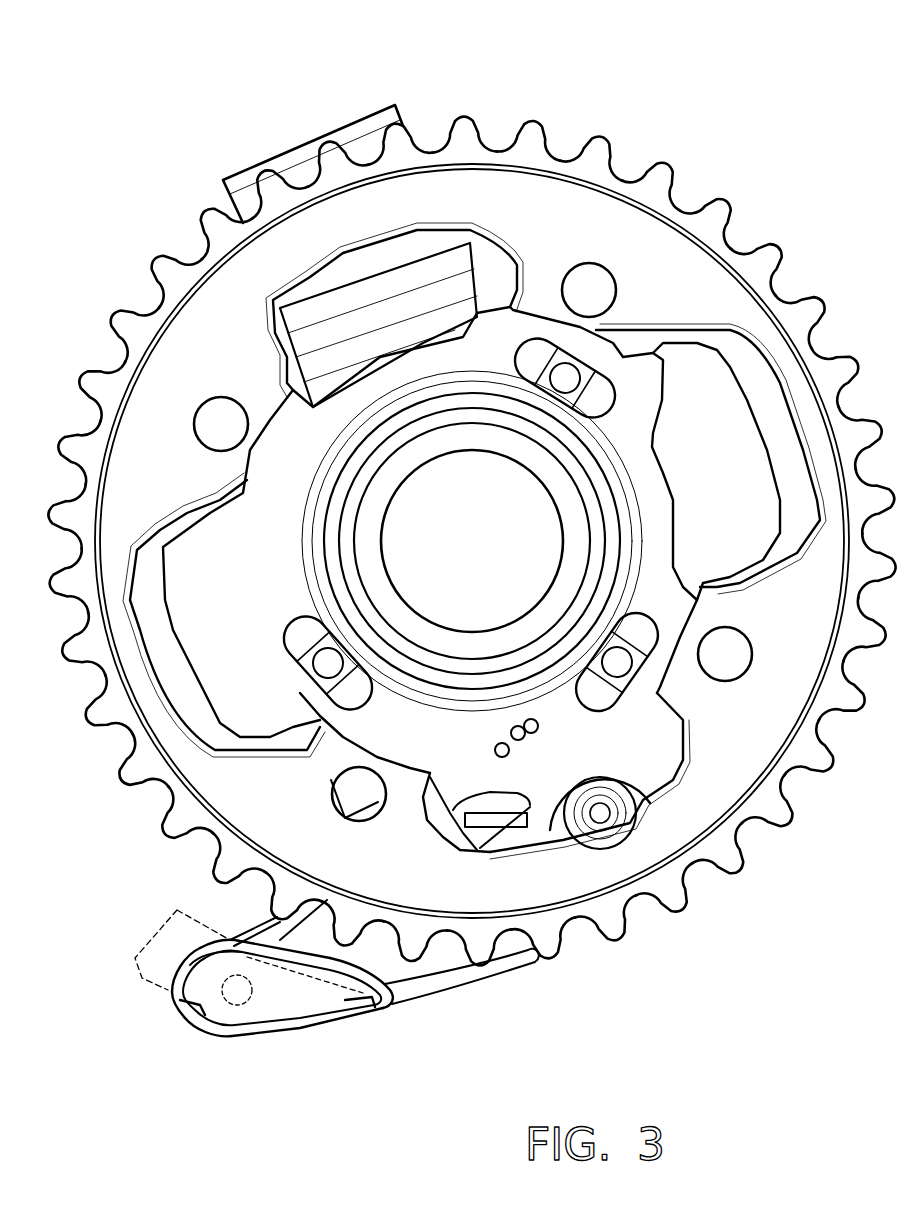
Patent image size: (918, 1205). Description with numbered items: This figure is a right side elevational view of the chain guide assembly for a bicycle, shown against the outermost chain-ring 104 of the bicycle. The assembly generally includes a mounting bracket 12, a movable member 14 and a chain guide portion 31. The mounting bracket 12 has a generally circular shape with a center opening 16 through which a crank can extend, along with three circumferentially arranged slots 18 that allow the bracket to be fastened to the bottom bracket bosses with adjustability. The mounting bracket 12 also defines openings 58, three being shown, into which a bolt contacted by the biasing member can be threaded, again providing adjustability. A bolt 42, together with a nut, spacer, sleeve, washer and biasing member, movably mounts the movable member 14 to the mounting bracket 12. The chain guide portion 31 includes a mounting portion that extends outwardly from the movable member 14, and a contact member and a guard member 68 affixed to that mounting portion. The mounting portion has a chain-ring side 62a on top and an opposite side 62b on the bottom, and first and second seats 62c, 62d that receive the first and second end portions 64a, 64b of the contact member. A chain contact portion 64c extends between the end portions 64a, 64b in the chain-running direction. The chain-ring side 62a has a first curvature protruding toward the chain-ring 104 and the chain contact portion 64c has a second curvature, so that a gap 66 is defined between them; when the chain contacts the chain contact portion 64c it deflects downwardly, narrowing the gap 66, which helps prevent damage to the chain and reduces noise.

The chain-ring 104 is at (600, 140).
The mounting bracket 12 is at (640, 468).
The center opening 16 is at (486, 554).
The slots 18 is at (605, 390).
The opening 58 is at (508, 735).
The bolt 42 is at (600, 817).
The chain guide portion 31 is at (114, 1076).
The chain-ring side 62a is at (323, 992).
The opposite side 62b is at (232, 1032).
The first seat 62c is at (198, 1010).
The second seat 62d is at (356, 1006).
The first end portion 64a is at (168, 992).
The second end portion 64b is at (418, 1005).
The chain contact portion 64c is at (232, 938).
The movable member 14 is at (468, 984).
The gap 66 is at (192, 955).
The guard member 68 is at (140, 978).